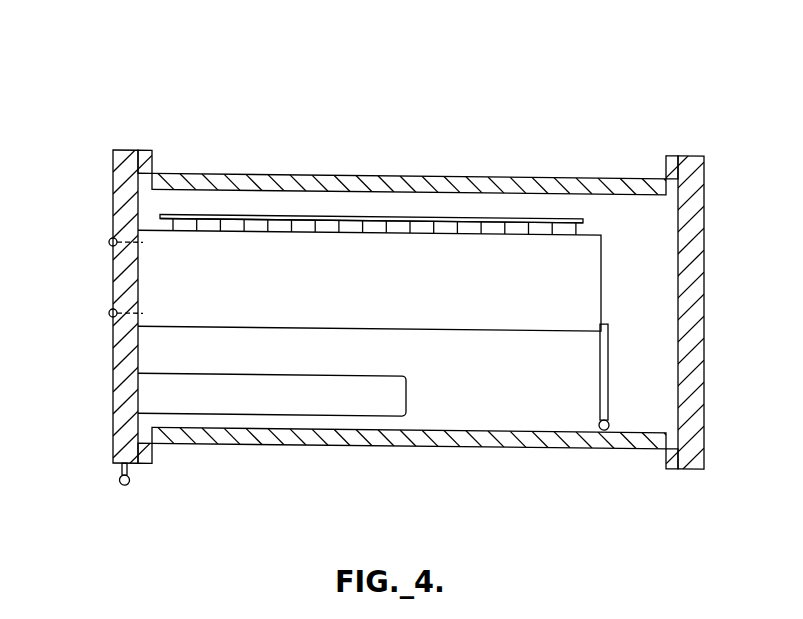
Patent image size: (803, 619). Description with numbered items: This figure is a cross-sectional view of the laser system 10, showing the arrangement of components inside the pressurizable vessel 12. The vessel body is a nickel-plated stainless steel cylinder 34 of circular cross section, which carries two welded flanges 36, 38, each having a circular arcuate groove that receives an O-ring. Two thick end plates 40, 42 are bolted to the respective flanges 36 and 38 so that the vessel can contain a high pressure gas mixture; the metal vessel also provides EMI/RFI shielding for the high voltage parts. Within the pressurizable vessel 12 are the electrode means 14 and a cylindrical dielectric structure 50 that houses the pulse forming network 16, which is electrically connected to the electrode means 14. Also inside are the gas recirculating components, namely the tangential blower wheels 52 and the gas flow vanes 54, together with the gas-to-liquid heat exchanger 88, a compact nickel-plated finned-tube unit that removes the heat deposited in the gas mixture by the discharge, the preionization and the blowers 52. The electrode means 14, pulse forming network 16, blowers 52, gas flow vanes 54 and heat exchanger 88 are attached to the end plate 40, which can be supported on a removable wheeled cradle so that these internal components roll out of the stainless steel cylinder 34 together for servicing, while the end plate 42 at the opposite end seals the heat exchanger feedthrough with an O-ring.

The laser system 10 is at (612, 54).
The pressurizable vessel 12 is at (469, 450).
The electrode means 14 is at (369, 212).
The pulse forming network 16 is at (507, 247).
The stainless steel cylinder 34 is at (253, 173).
The flange 36 is at (147, 150).
The flange 38 is at (671, 151).
The end plate 40 is at (122, 150).
The end plate 42 is at (692, 151).
The cylindrical dielectric structure 50 is at (512, 326).
The tangential blower wheels 52 is at (165, 268).
The gas flow vanes 54 is at (82, 270).
The gas-to-liquid heat exchanger 88 is at (253, 393).